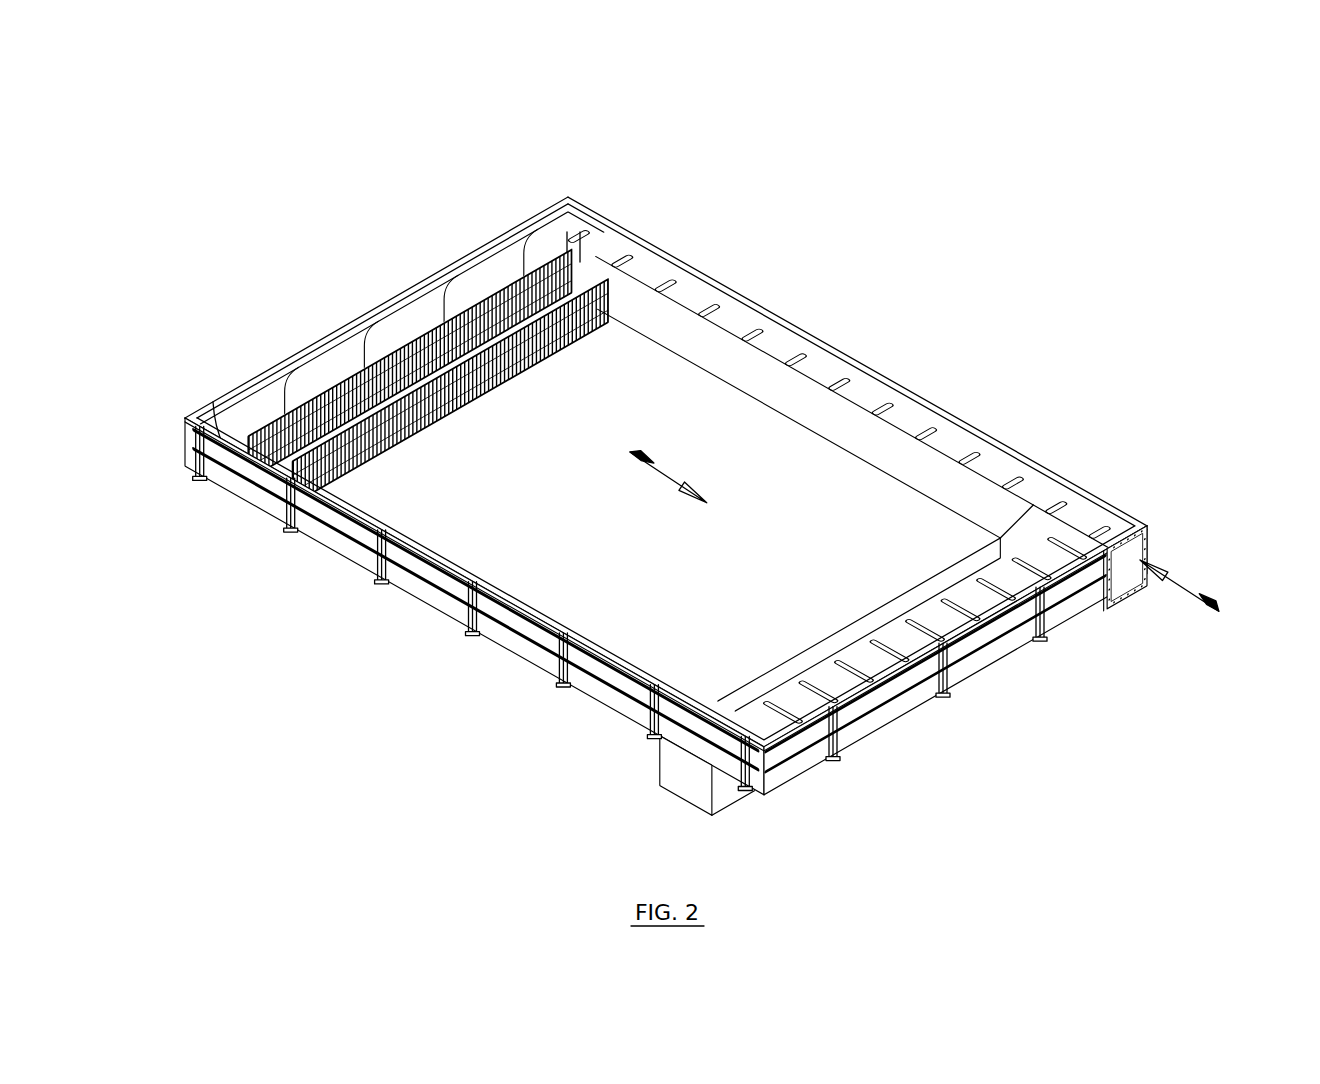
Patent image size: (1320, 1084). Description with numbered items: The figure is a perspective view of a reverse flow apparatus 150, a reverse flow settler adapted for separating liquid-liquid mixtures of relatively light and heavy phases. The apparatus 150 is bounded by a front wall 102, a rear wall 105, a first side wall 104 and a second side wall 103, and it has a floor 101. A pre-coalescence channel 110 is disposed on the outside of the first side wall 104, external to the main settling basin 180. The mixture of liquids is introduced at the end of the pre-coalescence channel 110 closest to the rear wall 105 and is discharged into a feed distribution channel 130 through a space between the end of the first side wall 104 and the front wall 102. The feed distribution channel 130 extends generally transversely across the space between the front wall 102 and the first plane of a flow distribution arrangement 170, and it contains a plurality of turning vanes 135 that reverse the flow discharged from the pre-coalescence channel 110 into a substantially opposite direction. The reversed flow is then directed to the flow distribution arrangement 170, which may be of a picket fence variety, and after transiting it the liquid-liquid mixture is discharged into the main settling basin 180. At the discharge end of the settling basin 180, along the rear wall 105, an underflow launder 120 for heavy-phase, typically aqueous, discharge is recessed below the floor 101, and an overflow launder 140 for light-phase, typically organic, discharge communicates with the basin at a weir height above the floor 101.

The floor 101 is at (820, 482).
The front wall 102 is at (240, 385).
The second side wall 103 is at (420, 566).
The first side wall 104 is at (770, 377).
The rear wall 105 is at (813, 673).
The pre-coalescence channel 110 is at (705, 299).
The underflow launder 120 is at (1008, 553).
The feed distribution channel 130 is at (586, 199).
The turning vanes 135 is at (463, 290).
The overflow launder 140 is at (1062, 558).
The reverse flow apparatus 150 is at (262, 574).
The flow distribution arrangement 170 is at (595, 277).
The main settling basin 180 is at (605, 548).